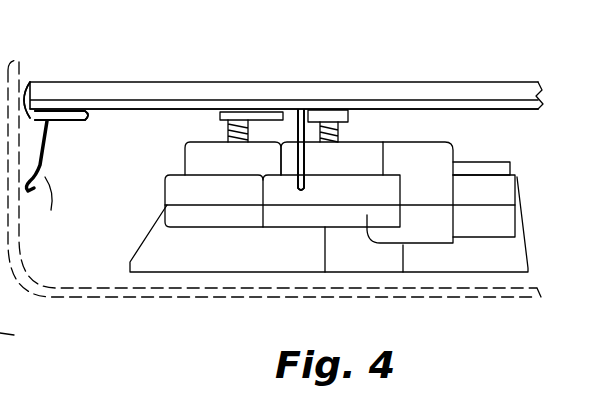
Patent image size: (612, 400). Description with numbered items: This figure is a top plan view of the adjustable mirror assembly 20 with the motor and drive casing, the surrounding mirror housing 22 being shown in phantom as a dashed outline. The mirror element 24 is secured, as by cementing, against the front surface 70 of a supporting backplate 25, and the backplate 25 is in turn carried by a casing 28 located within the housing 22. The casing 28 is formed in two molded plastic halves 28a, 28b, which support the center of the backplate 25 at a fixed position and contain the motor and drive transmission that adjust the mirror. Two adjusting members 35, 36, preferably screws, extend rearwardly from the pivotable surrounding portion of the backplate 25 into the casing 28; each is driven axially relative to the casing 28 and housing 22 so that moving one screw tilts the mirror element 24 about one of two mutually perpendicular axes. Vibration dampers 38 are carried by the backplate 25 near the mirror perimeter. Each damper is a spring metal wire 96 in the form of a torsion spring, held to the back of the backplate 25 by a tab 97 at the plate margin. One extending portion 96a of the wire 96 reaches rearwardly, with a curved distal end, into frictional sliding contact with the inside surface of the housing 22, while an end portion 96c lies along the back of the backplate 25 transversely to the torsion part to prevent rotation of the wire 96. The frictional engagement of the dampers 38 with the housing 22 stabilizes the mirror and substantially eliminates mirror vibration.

The apparatus 20 is at (452, 74).
The mirror housing 22 is at (167, 300).
The mirror element 24 is at (108, 82).
The supporting backplate 25 is at (470, 111).
The casing 28 is at (157, 195).
The casing half 28a is at (503, 228).
The casing half 28b is at (503, 188).
The adjusting member 35 is at (220, 117).
The adjusting member 36 is at (350, 120).
The vibration damper 38 is at (61, 144).
The front surface 70 is at (20, 342).
The wire 96 is at (60, 172).
The extending portion 96a is at (336, 160).
The end portion 96c is at (62, 110).
The tab 97 is at (24, 80).